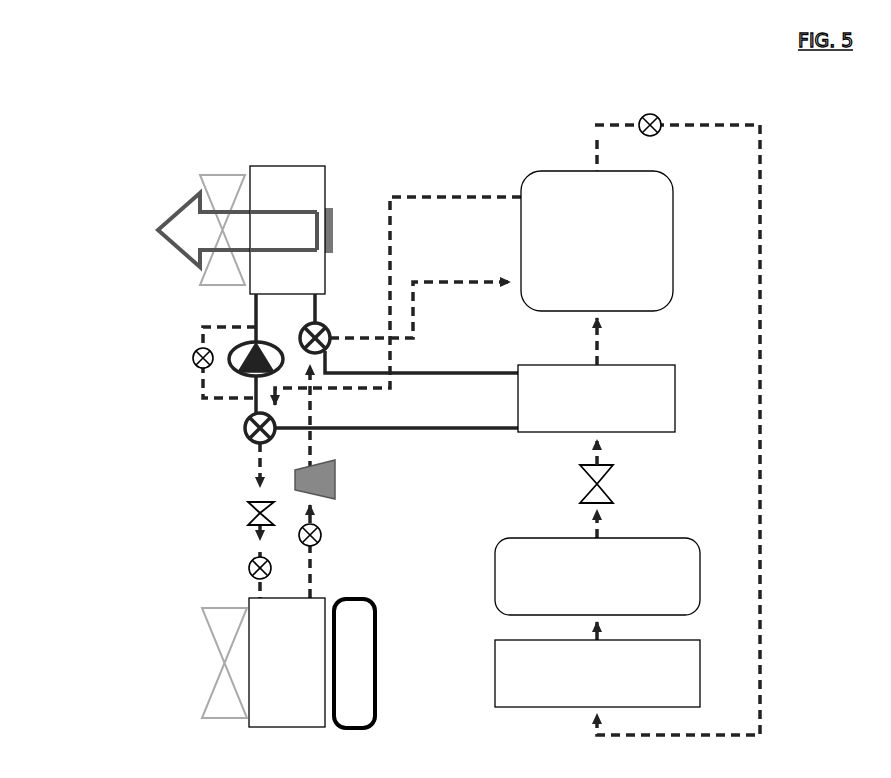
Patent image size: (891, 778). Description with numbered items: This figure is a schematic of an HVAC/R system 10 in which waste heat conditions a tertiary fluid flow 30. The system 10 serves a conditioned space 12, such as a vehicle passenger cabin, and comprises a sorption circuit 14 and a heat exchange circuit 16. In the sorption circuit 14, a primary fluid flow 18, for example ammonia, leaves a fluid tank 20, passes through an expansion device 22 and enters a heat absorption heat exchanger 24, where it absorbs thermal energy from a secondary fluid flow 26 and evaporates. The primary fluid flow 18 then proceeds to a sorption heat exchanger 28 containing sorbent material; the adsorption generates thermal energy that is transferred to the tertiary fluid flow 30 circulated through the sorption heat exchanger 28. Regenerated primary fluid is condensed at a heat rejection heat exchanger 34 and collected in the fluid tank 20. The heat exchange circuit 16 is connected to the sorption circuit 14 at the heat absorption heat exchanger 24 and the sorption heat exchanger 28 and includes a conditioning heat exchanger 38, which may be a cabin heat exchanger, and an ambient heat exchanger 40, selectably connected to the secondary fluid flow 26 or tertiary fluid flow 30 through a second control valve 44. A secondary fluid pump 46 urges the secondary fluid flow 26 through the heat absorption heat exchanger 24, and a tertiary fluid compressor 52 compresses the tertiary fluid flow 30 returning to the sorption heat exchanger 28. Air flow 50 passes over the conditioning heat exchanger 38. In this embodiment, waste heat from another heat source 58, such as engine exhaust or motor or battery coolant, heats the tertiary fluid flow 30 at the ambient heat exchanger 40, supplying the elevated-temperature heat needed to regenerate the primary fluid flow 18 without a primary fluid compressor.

The HVAC/R system 10 is at (95, 160).
The conditioned space 12 is at (135, 243).
The sorption circuit 14 is at (533, 146).
The heat exchange circuit 16 is at (283, 148).
The primary fluid flow 18 is at (761, 217).
The fluid tank 20 is at (610, 591).
The expansion device 22 is at (608, 492).
The heat absorption heat exchanger 24 is at (610, 410).
The secondary fluid flow 26 is at (497, 373).
The sorption heat exchanger 28 is at (610, 243).
The tertiary fluid flow 30 is at (450, 192).
The heat rejection heat exchanger 34 is at (590, 678).
The conditioning heat exchanger 38 is at (300, 199).
The ambient heat exchanger 40 is at (297, 653).
The second control valve 44 is at (333, 327).
The secondary fluid pump 46 is at (228, 343).
The air flow arrow 50 is at (188, 208).
The tertiary fluid compressor 52 is at (337, 474).
The heat source 58 is at (367, 686).